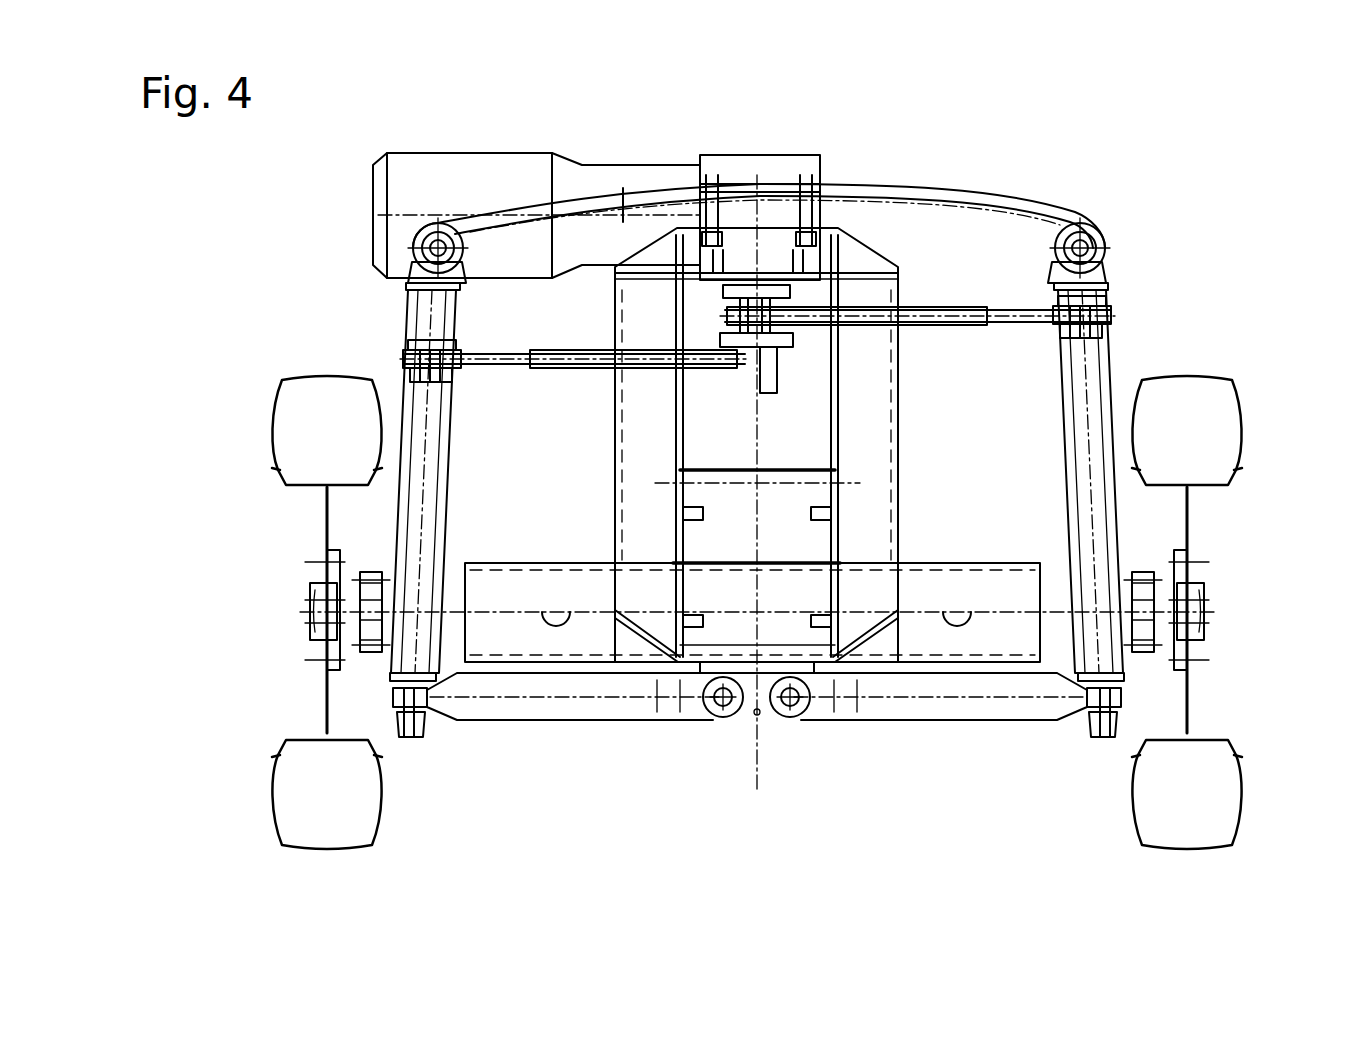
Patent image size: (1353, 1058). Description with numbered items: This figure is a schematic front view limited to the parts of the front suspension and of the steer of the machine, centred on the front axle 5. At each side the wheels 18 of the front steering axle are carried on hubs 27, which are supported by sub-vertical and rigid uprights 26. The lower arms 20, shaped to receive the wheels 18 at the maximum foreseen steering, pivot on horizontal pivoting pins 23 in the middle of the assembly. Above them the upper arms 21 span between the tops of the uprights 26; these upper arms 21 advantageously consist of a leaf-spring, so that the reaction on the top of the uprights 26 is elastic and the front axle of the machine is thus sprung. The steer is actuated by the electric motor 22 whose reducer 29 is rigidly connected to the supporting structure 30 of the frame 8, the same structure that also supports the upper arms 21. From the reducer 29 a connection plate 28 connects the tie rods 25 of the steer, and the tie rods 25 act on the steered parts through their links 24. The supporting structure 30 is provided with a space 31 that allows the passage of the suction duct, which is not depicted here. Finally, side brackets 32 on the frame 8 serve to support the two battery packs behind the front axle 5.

The front axle 5 is at (1175, 212).
The frame 8 is at (836, 585).
The wheels 18 is at (305, 418).
The lower arms 20 is at (580, 712).
The upper arms 21 is at (612, 195).
The electric motor 22 is at (465, 165).
The horizontal pivoting pins 23 is at (712, 716).
The links 24 is at (405, 360).
The tie rods 25 is at (540, 356).
The uprights 26 is at (403, 513).
The hubs 27 is at (300, 613).
The connection plate 28 is at (797, 345).
The reducer 29 is at (740, 167).
The supporting structure 30 is at (848, 258).
The space 31 is at (742, 444).
The side brackets 32 is at (500, 633).